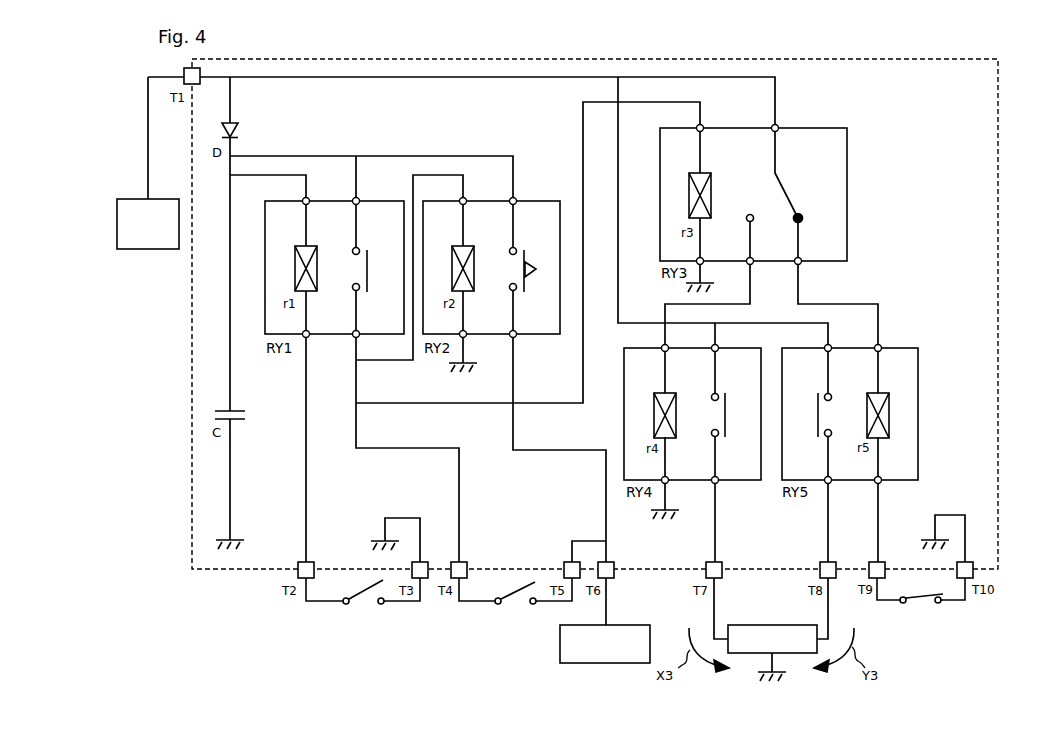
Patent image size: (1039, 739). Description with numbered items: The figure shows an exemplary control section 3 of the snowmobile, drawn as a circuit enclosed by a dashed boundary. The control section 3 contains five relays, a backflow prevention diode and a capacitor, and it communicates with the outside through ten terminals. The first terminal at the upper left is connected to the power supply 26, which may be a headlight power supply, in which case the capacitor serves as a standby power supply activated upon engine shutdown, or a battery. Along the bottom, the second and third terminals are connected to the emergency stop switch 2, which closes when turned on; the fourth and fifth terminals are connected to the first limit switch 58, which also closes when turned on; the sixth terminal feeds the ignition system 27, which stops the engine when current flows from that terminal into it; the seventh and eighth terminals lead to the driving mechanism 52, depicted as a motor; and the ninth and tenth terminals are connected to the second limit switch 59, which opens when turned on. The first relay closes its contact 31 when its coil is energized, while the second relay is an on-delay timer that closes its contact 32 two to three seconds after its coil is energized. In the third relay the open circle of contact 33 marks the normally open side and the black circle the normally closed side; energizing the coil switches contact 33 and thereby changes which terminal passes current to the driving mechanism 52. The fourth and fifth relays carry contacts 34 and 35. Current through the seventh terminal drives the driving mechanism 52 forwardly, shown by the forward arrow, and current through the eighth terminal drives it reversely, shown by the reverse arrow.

The emergency stop switch 2 is at (367, 607).
The control section 3 is at (998, 93).
The power supply 26 is at (145, 252).
The ignition system 27 is at (630, 624).
The contact 31 is at (350, 270).
The contact 32 is at (507, 270).
The contact 33 is at (763, 200).
The contact 34 is at (708, 420).
The contact 35 is at (812, 423).
The driving mechanism 52 is at (772, 622).
The first limit switch 58 is at (518, 607).
The second limit switch 59 is at (923, 605).